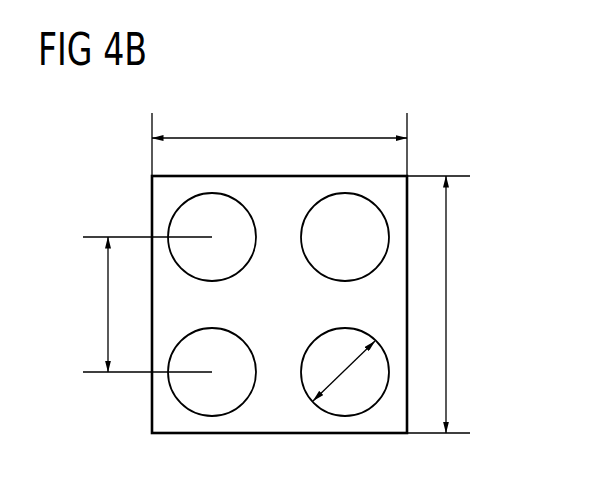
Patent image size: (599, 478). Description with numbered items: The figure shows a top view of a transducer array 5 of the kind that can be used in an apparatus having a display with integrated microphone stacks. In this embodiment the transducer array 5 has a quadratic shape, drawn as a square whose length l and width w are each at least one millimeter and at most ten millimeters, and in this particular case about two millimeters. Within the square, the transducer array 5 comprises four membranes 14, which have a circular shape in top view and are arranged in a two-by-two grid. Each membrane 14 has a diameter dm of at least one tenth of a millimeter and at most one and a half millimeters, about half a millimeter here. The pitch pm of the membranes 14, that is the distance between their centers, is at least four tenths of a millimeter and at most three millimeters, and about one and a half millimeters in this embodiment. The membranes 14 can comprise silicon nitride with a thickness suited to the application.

The transducer array 5 is at (448, 127).
The membranes 14 is at (323, 257).
The length l is at (280, 138).
The width w is at (446, 303).
The pitch pm is at (107, 307).
The diameter dm is at (342, 371).